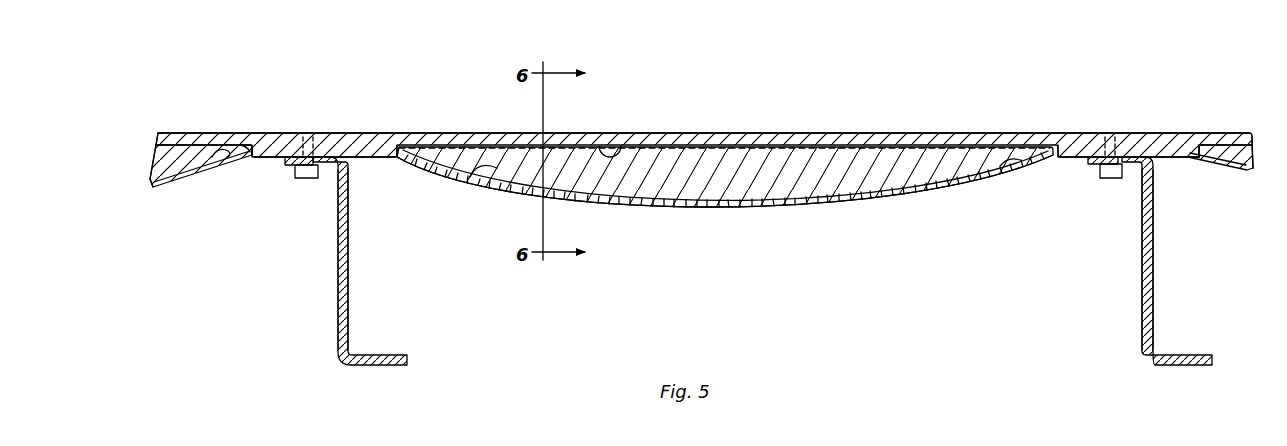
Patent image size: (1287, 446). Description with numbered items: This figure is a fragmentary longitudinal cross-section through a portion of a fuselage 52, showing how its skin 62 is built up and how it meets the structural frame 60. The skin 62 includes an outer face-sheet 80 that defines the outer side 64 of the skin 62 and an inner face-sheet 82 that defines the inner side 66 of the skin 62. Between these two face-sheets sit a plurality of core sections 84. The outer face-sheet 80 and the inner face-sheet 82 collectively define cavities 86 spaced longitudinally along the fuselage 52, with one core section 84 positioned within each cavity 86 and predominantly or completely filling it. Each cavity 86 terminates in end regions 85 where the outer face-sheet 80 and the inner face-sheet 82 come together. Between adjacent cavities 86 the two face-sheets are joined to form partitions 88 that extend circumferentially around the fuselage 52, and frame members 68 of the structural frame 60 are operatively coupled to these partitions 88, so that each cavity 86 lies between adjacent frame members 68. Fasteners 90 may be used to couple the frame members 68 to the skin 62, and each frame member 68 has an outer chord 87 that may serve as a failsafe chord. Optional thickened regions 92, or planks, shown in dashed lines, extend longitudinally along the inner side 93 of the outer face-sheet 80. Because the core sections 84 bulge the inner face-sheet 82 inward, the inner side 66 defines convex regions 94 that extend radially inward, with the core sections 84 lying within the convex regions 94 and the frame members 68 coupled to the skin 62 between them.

The fuselage 52 is at (1069, 44).
The structural frame 60 is at (336, 298).
The skin 62 is at (398, 70).
The outer side 64 is at (488, 131).
The inner side 66 is at (477, 192).
The frame member 68 is at (337, 238).
The outer face-sheet 80 is at (195, 133).
The inner face-sheet 82 is at (190, 187).
The core section 84 is at (215, 172).
The end region 85 is at (253, 159).
The cavity 86 is at (162, 187).
The outer chord 87 is at (316, 180).
The partition 88 is at (375, 158).
The fastener 90 is at (300, 180).
The thickened region 92 is at (173, 133).
The inner side of the outer face-sheet 93 is at (236, 146).
The convex region 94 is at (180, 192).